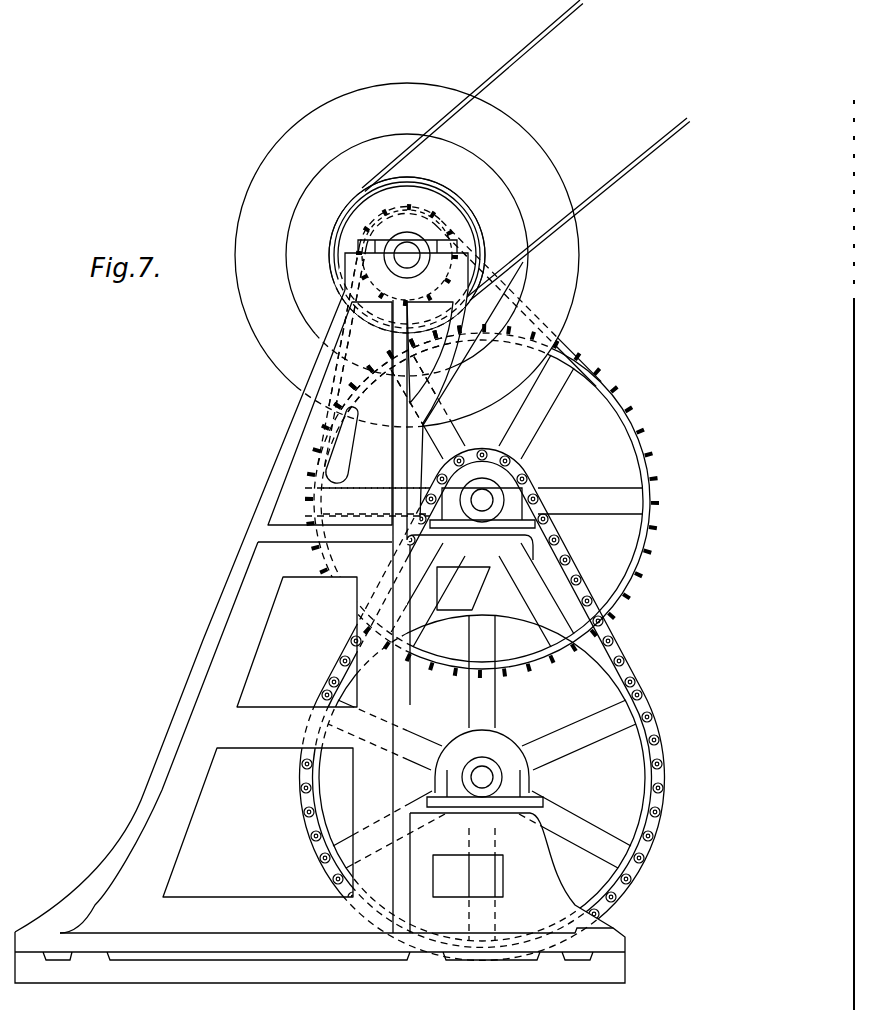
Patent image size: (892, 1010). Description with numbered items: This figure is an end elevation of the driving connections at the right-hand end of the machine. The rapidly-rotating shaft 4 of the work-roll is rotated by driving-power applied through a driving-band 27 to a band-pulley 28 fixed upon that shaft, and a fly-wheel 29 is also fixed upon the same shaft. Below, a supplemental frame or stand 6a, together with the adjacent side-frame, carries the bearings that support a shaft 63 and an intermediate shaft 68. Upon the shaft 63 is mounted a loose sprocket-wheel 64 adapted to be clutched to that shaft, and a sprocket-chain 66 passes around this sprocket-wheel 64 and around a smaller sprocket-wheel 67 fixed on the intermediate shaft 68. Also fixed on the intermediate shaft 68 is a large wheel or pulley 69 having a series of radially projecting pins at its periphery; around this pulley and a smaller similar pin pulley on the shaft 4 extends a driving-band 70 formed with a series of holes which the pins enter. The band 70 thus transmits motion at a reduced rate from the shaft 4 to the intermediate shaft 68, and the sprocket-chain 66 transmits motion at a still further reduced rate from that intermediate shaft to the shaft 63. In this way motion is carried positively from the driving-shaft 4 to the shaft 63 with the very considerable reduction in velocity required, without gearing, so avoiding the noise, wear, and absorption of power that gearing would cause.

The shaft of the work-roll 4 is at (418, 248).
The supplemental frame or stand 6a is at (255, 507).
The driving-band 27 is at (622, 182).
The band-pulley 28 is at (418, 255).
The fly-wheel 29 is at (588, 270).
The shaft 63 is at (492, 771).
The sprocket-wheel 64 is at (636, 737).
The sprocket-chain 66 is at (342, 655).
The sprocket-wheel 67 is at (521, 483).
The intermediate shaft 68 is at (485, 491).
The large wheel or pulley 69 is at (611, 412).
The driving-band 70 is at (572, 352).